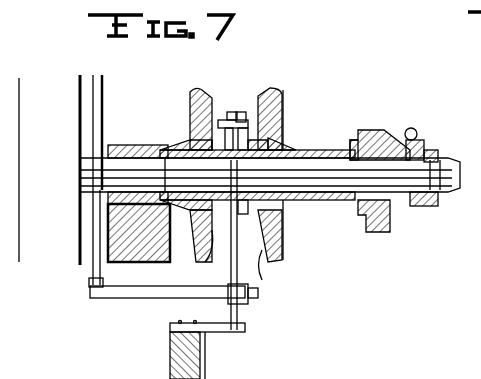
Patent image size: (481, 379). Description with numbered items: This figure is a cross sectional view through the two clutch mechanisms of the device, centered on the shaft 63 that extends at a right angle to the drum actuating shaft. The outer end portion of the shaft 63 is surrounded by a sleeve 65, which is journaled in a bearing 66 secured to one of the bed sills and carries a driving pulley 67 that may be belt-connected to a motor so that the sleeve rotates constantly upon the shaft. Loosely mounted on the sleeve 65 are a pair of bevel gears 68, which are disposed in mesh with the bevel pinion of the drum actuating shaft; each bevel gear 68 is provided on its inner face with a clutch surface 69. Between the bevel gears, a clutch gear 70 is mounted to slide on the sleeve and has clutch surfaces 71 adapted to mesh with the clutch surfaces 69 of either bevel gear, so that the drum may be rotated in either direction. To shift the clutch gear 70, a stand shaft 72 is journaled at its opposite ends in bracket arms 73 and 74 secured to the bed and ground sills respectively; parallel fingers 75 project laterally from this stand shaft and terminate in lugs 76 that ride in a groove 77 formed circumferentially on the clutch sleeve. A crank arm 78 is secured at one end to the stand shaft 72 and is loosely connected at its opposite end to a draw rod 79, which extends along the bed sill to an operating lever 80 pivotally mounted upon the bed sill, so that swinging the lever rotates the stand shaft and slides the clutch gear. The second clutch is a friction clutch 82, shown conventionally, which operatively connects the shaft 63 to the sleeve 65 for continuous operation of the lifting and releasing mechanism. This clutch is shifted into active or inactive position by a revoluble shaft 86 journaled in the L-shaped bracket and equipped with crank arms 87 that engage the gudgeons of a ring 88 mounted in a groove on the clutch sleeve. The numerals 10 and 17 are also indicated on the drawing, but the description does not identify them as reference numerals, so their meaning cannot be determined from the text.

The frame/base 10 is at (170, 360).
The hanger 17 is at (97, 278).
The shaft 63 is at (452, 176).
The sleeve 65 is at (328, 149).
The bearing 66 is at (136, 146).
The driving pulley 67 is at (39, 170).
The bevel gears 68 is at (192, 108).
The clutch surface 69 is at (242, 220).
The clutch gear 70 is at (284, 142).
The clutch surfaces 71 is at (228, 280).
The stand shaft 72 is at (240, 306).
The bracket arm 73 is at (220, 120).
The bracket arm 74 is at (216, 332).
The fingers 75 is at (241, 112).
The lugs 76 is at (250, 126).
The groove 77 is at (285, 118).
The crank arm 78 is at (140, 298).
The draw rod 79 is at (92, 290).
The operating lever 80 is at (100, 98).
The friction clutch 82 is at (384, 235).
The revoluble shaft 86 is at (414, 129).
The crank arms 87 is at (426, 150).
The ring 88 is at (418, 208).